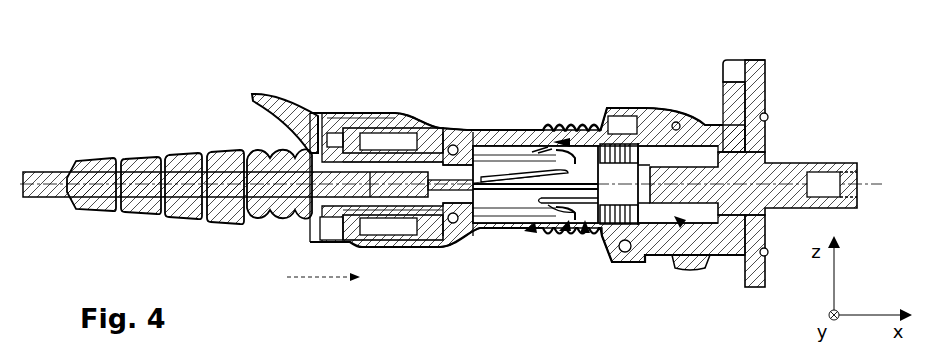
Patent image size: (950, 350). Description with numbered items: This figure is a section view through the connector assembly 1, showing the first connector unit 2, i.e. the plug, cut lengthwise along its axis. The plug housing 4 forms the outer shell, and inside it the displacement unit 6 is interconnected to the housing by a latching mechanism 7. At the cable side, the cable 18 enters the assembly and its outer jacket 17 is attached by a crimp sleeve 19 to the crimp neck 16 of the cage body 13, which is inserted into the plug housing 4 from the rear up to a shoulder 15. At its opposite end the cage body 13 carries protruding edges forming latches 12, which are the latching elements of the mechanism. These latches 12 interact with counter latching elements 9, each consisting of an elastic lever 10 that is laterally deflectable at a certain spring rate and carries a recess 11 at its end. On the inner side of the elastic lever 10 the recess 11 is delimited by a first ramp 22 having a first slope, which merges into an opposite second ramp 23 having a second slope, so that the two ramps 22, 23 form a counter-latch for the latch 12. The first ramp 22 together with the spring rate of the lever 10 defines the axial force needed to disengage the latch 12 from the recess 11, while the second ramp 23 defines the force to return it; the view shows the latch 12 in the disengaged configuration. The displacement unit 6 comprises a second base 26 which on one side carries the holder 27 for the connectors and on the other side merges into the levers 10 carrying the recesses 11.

The connector assembly 1 is at (246, 50).
The first connector unit 2 is at (430, 80).
The plug housing 4 is at (488, 136).
The displacement unit 6 is at (706, 264).
The latching mechanism 7 is at (540, 218).
The counter latching elements 9 is at (587, 226).
The elastic lever 10 is at (618, 128).
The recess 11 is at (557, 138).
The latch 12 is at (596, 140).
The cage body 13 is at (494, 215).
The shoulder 15 is at (422, 233).
The crimp neck 16 is at (398, 134).
The outer jacket 17 is at (182, 157).
The cable 18 is at (122, 157).
The crimp sleeve 19 is at (347, 117).
The first ramp 22 is at (567, 133).
The second ramp 23 is at (579, 132).
The second base 26 is at (678, 270).
The holder 27 is at (697, 125).